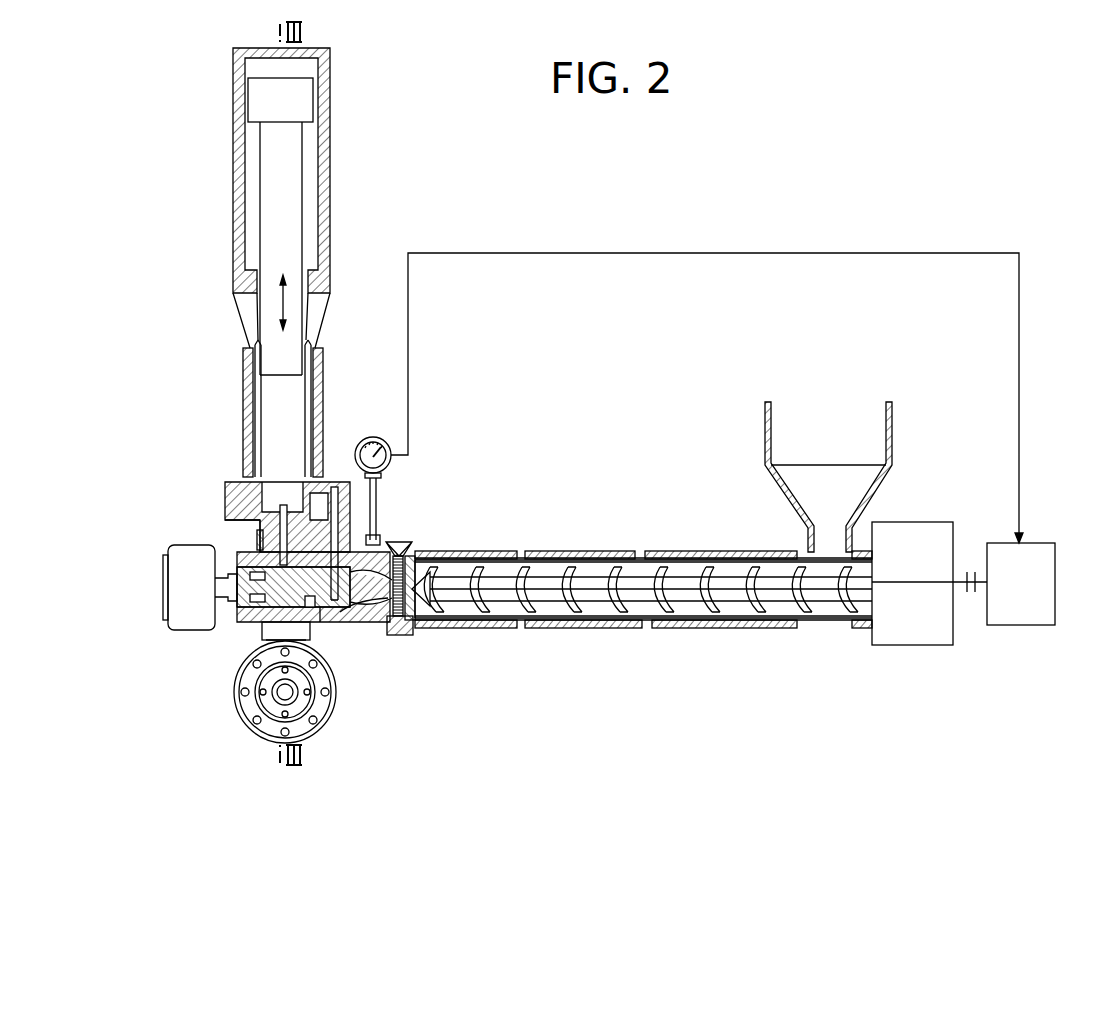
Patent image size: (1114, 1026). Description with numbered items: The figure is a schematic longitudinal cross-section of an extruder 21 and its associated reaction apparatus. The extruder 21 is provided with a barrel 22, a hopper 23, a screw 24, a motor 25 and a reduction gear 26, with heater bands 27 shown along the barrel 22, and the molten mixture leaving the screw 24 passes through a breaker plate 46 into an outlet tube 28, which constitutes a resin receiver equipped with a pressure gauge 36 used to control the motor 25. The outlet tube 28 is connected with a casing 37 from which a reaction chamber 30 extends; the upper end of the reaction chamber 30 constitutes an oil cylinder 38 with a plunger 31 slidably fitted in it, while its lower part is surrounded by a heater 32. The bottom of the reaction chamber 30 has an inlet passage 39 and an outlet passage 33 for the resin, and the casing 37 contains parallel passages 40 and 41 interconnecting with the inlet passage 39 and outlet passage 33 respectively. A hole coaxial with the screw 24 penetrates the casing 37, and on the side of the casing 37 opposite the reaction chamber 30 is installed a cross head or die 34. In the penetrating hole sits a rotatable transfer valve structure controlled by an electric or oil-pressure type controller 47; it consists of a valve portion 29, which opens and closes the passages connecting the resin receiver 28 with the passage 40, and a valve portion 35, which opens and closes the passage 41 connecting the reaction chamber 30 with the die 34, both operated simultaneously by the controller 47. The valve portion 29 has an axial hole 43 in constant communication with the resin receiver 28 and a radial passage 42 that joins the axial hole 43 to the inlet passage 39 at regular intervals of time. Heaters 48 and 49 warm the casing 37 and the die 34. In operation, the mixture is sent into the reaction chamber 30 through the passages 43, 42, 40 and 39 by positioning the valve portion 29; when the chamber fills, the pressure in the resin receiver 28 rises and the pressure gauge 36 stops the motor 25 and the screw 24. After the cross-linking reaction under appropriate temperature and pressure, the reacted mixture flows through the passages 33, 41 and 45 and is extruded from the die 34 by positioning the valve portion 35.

The extruder 21 is at (612, 628).
The barrel 22 is at (663, 556).
The hopper 23 is at (830, 410).
The screw 24 is at (598, 575).
The motor 25 is at (1060, 580).
The reduction gear 26 is at (912, 526).
The heater bands 27 is at (708, 552).
The outlet tube 28 is at (372, 615).
The valve portion 29 is at (328, 623).
The reaction chamber 30 is at (250, 410).
The plunger 31 is at (270, 187).
The heater 32 is at (248, 438).
The outlet passage 33 is at (284, 512).
The cross head or die 34 is at (250, 706).
The valve portion 35 is at (245, 600).
The pressure gauge 36 is at (373, 437).
The casing 37 is at (266, 540).
The oil cylinder 38 is at (328, 168).
The inlet passage 39 is at (330, 488).
The passage 40 is at (340, 525).
The passage 41 is at (258, 522).
The radial passage 42 is at (390, 545).
The axial hole 43 is at (352, 612).
The passage 45 is at (272, 643).
The breaker plate 46 is at (412, 620).
The controller 47 is at (183, 568).
The heater 48 is at (256, 540).
The heater 49 is at (264, 626).